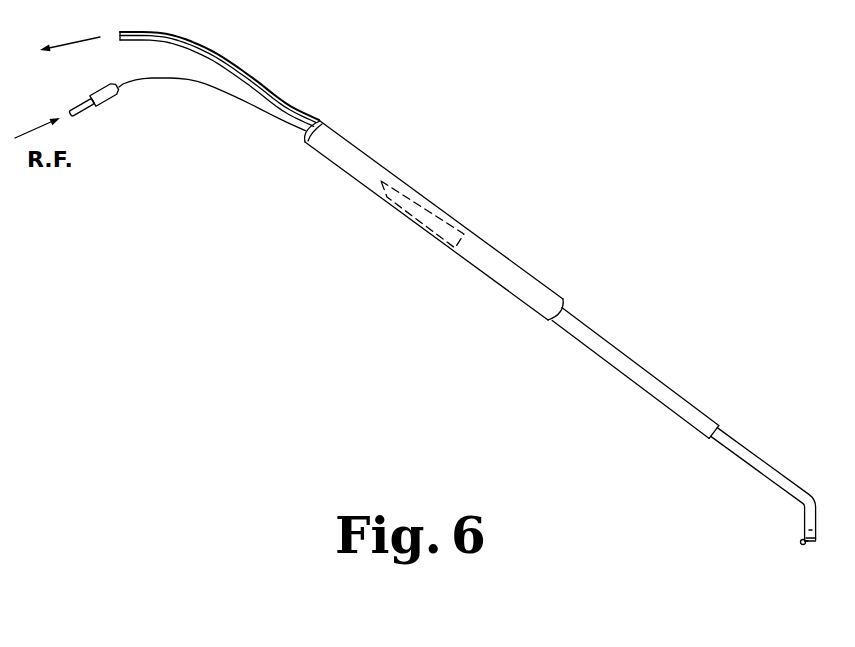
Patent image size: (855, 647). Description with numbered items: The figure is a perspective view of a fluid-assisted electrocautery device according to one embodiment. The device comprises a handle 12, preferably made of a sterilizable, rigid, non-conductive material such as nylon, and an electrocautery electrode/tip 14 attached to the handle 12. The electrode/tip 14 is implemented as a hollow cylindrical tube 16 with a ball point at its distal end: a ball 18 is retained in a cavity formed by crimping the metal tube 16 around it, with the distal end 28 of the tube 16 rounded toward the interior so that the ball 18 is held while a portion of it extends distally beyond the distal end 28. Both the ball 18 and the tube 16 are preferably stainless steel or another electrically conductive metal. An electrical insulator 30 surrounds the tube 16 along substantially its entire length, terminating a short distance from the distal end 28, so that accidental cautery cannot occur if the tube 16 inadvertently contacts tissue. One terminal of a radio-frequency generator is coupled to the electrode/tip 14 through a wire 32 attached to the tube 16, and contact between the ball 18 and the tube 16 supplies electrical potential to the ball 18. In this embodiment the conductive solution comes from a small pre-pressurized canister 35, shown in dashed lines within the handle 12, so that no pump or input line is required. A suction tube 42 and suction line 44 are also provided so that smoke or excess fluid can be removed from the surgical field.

The handle 12 is at (493, 261).
The electrocautery electrode/tip 14 is at (813, 572).
The hollow cylindrical tube 16 is at (807, 547).
The ball 18 is at (802, 547).
The distal end of tube 28 is at (798, 540).
The electrical insulator 30 is at (742, 447).
The wire 32 is at (211, 97).
The pre-pressurized canister 35 is at (404, 190).
The suction tube 42 is at (620, 360).
The suction line 44 is at (214, 47).